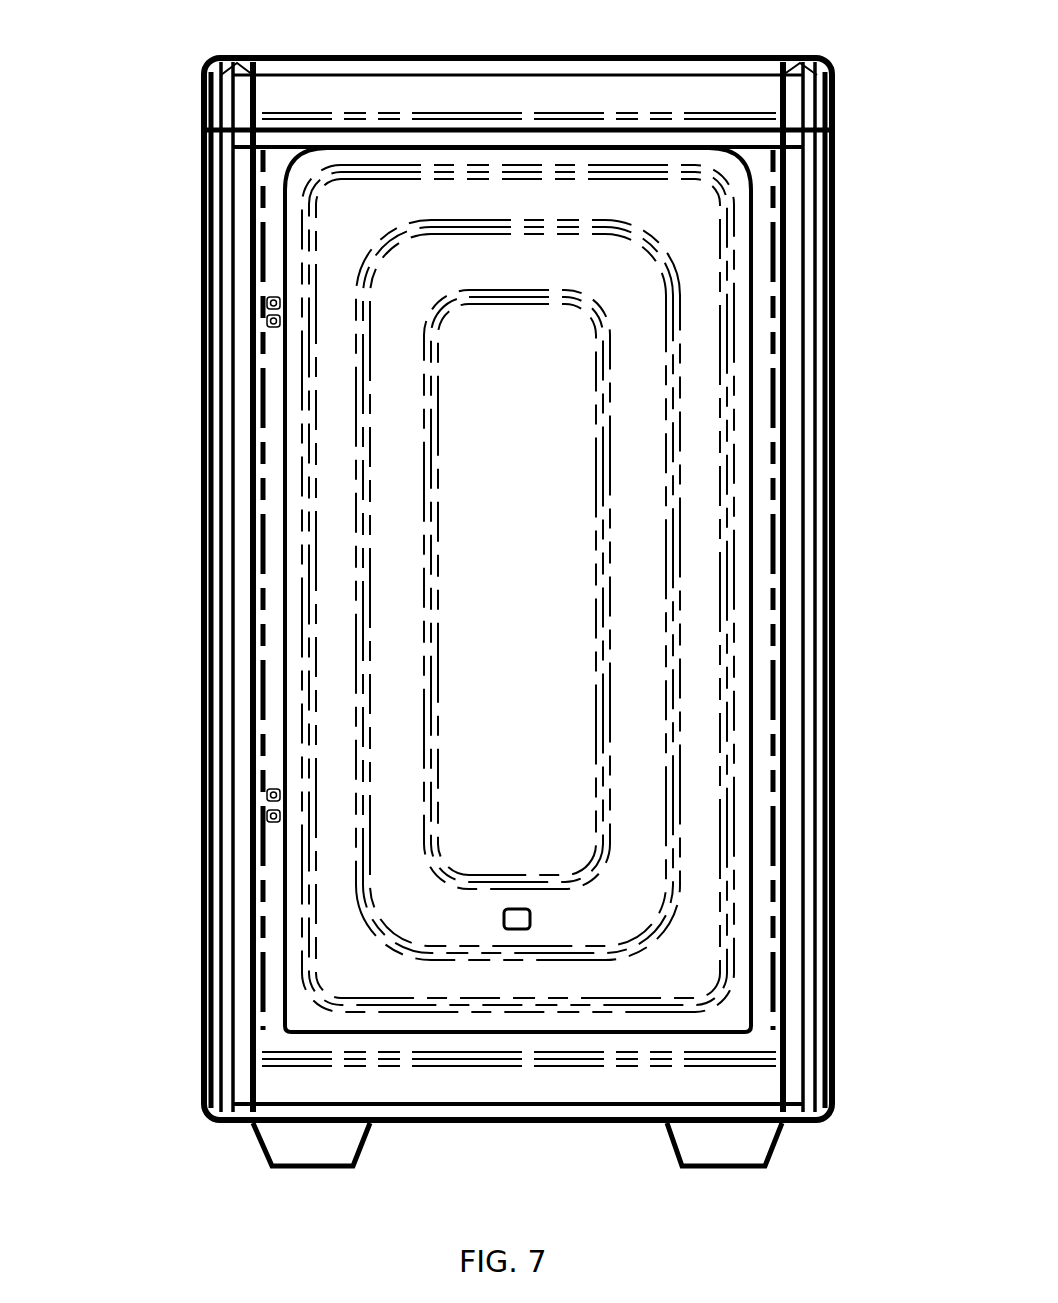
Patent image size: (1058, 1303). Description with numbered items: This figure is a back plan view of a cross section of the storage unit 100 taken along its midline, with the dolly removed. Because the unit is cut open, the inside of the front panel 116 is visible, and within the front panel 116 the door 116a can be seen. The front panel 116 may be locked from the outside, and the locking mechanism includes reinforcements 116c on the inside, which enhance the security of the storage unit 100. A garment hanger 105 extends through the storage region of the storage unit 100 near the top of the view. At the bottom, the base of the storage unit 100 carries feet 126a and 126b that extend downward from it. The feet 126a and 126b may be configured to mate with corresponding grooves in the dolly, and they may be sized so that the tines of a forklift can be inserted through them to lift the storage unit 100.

The storage unit 100 is at (130, 66).
The garment hanger 105 is at (527, 133).
The front panel 116 is at (762, 236).
The door 116a is at (518, 588).
The reinforcements 116c is at (272, 306).
The foot 126a is at (311, 1144).
The foot 126b is at (724, 1144).